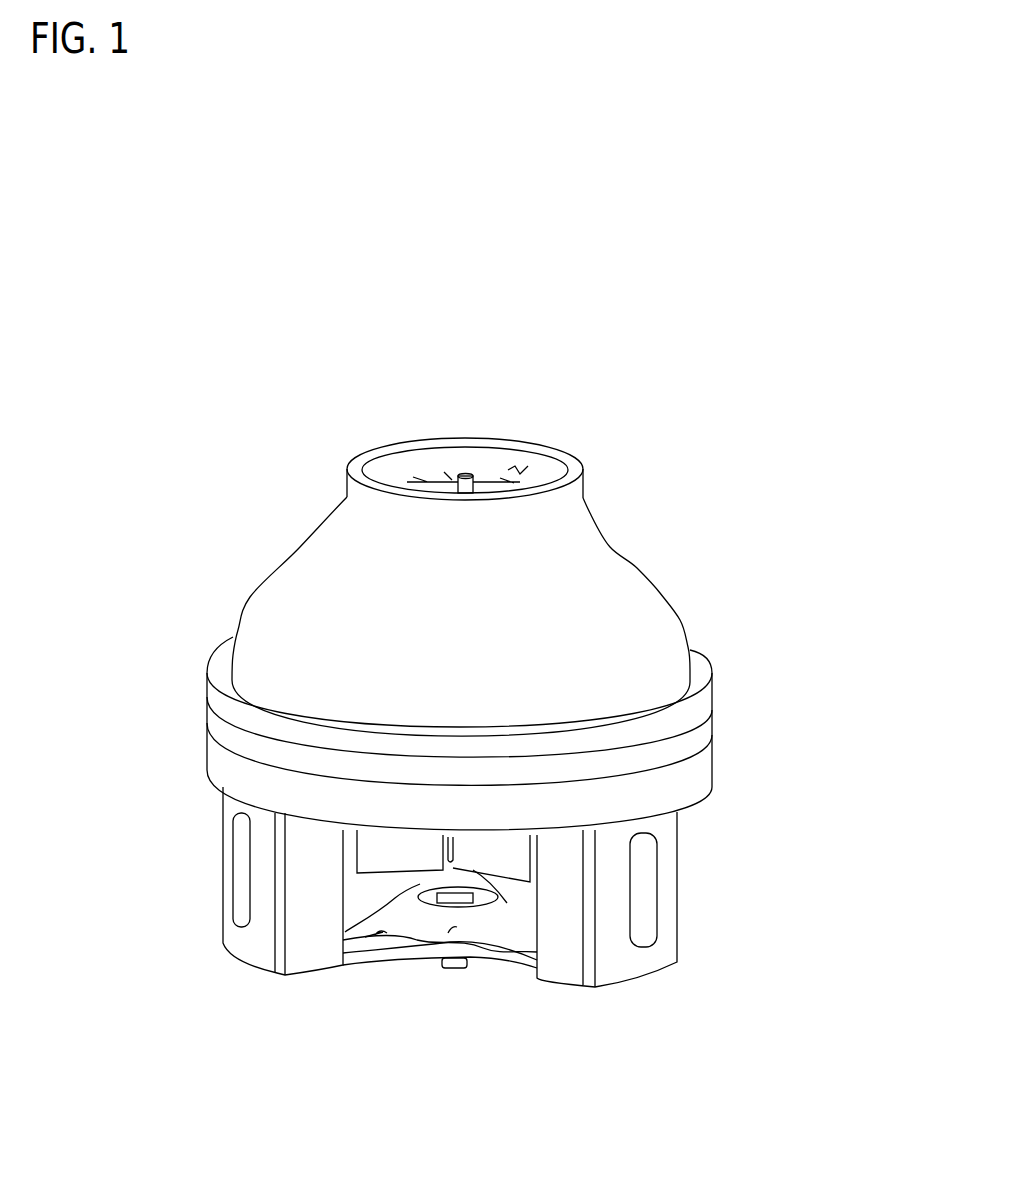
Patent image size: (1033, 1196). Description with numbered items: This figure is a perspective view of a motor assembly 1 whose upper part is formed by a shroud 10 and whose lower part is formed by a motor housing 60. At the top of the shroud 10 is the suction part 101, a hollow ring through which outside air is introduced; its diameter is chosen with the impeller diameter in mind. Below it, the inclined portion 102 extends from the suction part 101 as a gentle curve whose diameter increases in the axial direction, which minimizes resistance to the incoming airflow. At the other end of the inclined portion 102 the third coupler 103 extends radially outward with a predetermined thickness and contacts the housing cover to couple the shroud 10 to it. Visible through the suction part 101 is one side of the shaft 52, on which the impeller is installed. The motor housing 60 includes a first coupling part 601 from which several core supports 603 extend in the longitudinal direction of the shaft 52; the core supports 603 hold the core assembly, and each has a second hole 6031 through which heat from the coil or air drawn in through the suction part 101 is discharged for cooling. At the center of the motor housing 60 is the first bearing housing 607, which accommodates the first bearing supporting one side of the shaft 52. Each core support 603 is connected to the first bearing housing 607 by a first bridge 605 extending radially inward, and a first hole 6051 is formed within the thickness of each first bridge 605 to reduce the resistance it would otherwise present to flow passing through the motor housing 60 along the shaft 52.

The motor assembly 1 is at (187, 438).
The shroud 10 is at (873, 402).
The suction part 101 is at (523, 473).
The inclined portion 102 is at (637, 568).
The third coupler 103 is at (708, 672).
The shaft 52 is at (463, 473).
The motor housing 60 is at (873, 805).
The first coupling part 601 is at (703, 775).
The core support 603 is at (677, 877).
The second hole 6031 is at (643, 897).
The first bridge 605 is at (497, 962).
The first bearing housing 607 is at (457, 927).
The first hole 6051 is at (387, 933).